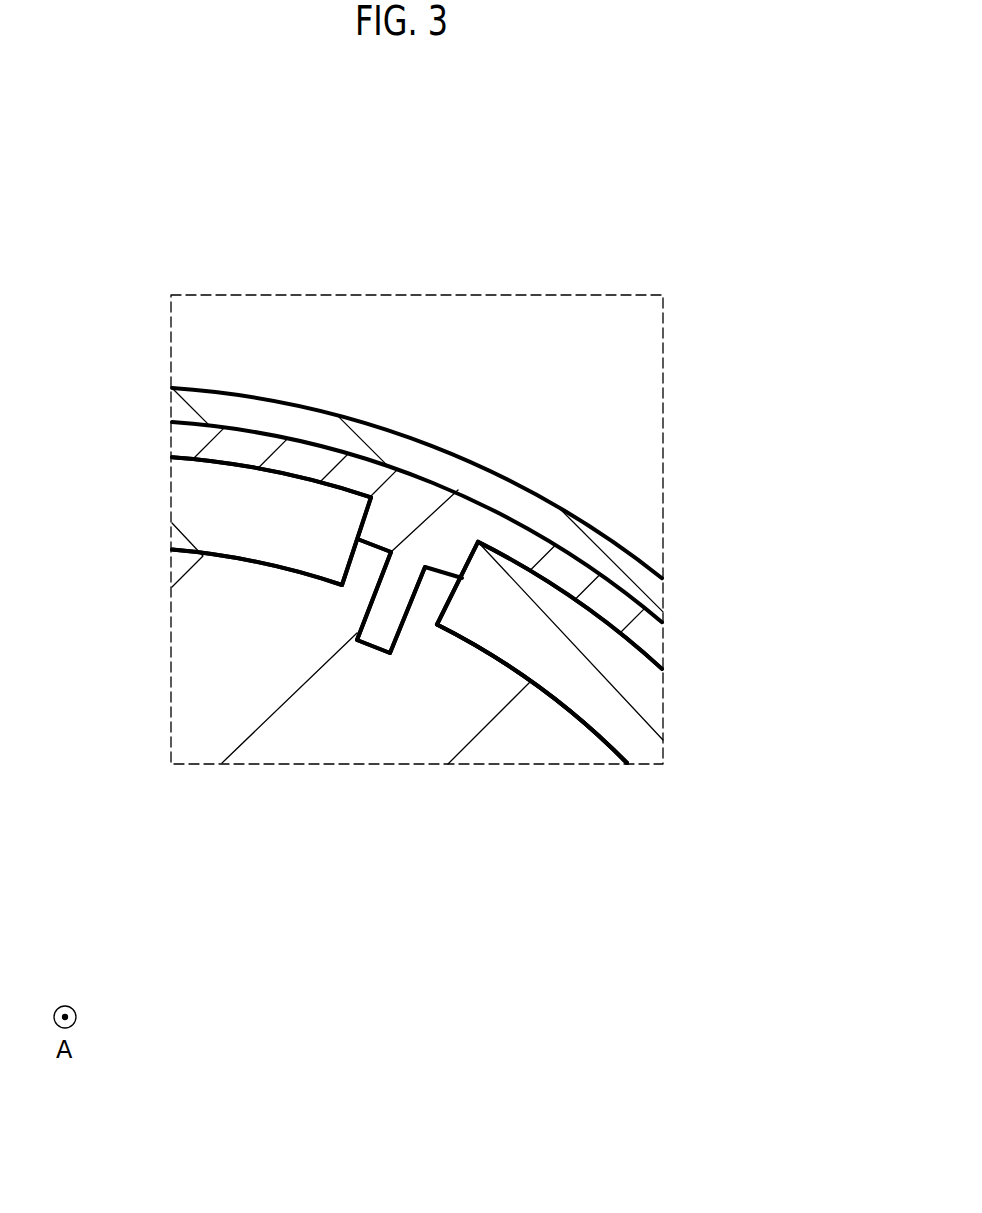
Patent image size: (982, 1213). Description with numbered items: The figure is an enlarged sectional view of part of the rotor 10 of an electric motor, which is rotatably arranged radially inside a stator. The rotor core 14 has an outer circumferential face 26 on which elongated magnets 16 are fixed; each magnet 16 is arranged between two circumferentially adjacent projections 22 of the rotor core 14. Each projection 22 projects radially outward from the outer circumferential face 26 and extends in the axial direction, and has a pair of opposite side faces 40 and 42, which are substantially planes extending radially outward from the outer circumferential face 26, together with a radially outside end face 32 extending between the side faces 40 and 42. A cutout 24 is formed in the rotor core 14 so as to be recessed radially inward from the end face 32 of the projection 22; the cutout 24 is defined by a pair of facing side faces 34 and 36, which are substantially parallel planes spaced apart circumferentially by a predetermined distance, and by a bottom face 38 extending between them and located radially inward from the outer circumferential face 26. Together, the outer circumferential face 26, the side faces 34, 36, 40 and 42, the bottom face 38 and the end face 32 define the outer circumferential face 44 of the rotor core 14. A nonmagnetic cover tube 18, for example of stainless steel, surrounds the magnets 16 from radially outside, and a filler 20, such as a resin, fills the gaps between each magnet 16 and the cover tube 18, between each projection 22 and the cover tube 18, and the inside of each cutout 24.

The rotor 10 is at (645, 188).
The rotor core 14 is at (202, 710).
The magnet 16 is at (208, 498).
The cover tube 18 is at (248, 418).
The filler 20 is at (462, 527).
The projection 22 is at (422, 551).
The cutout 24 is at (391, 657).
The outer circumferential face 26 is at (245, 562).
The radially outside end face 32 is at (378, 538).
The side face 34 is at (373, 614).
The side face 36 is at (408, 603).
The bottom face 38 is at (363, 640).
The side face 40 is at (350, 556).
The side face 42 is at (452, 603).
The outer circumferential face 44 is at (556, 698).